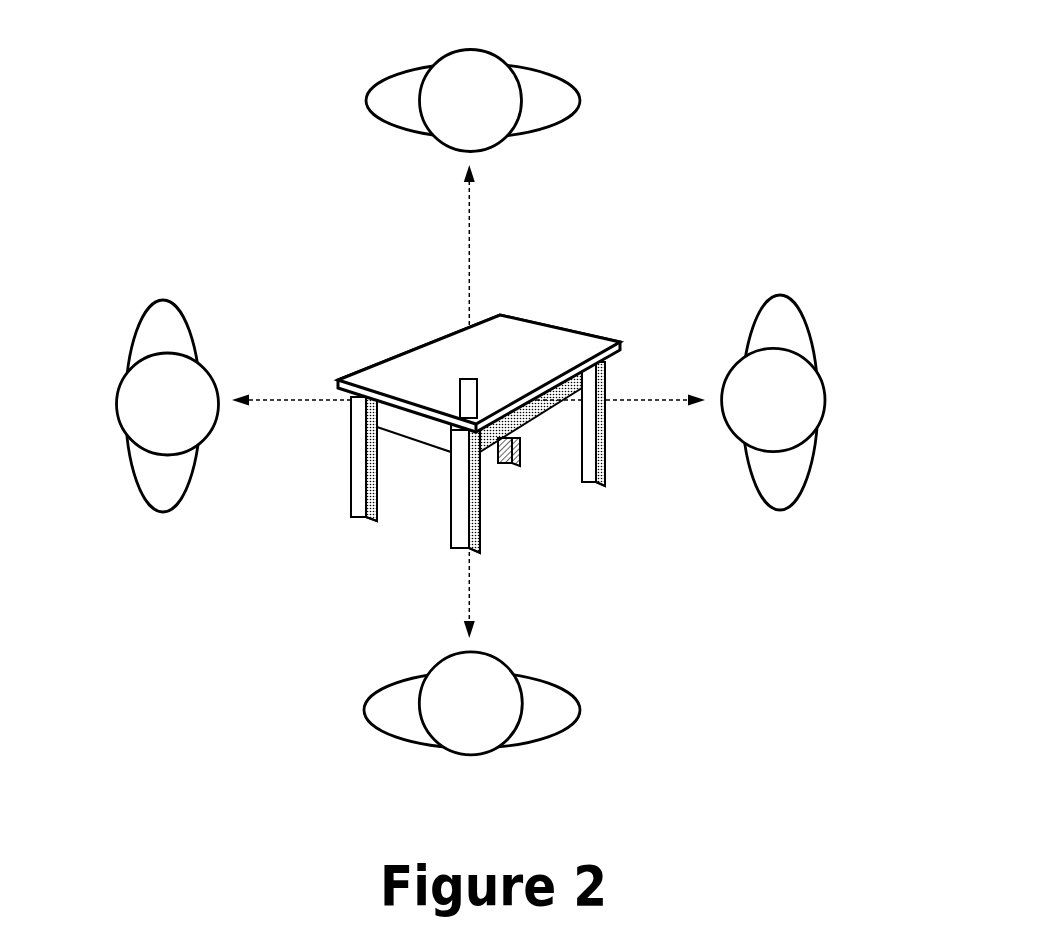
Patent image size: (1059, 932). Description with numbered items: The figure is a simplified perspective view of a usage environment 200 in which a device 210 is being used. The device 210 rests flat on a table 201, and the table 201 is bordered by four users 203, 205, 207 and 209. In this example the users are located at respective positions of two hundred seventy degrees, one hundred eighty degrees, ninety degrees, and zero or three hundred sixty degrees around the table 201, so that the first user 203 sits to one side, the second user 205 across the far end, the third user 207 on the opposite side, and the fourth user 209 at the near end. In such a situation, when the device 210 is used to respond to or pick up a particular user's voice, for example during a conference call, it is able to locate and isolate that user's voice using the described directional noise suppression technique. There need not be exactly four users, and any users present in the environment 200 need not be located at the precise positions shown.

The environment 200 is at (690, 105).
The table 201 is at (578, 345).
The user 203 is at (190, 417).
The user 205 is at (493, 114).
The user 207 is at (797, 411).
The user 209 is at (493, 715).
The device 210 is at (476, 388).